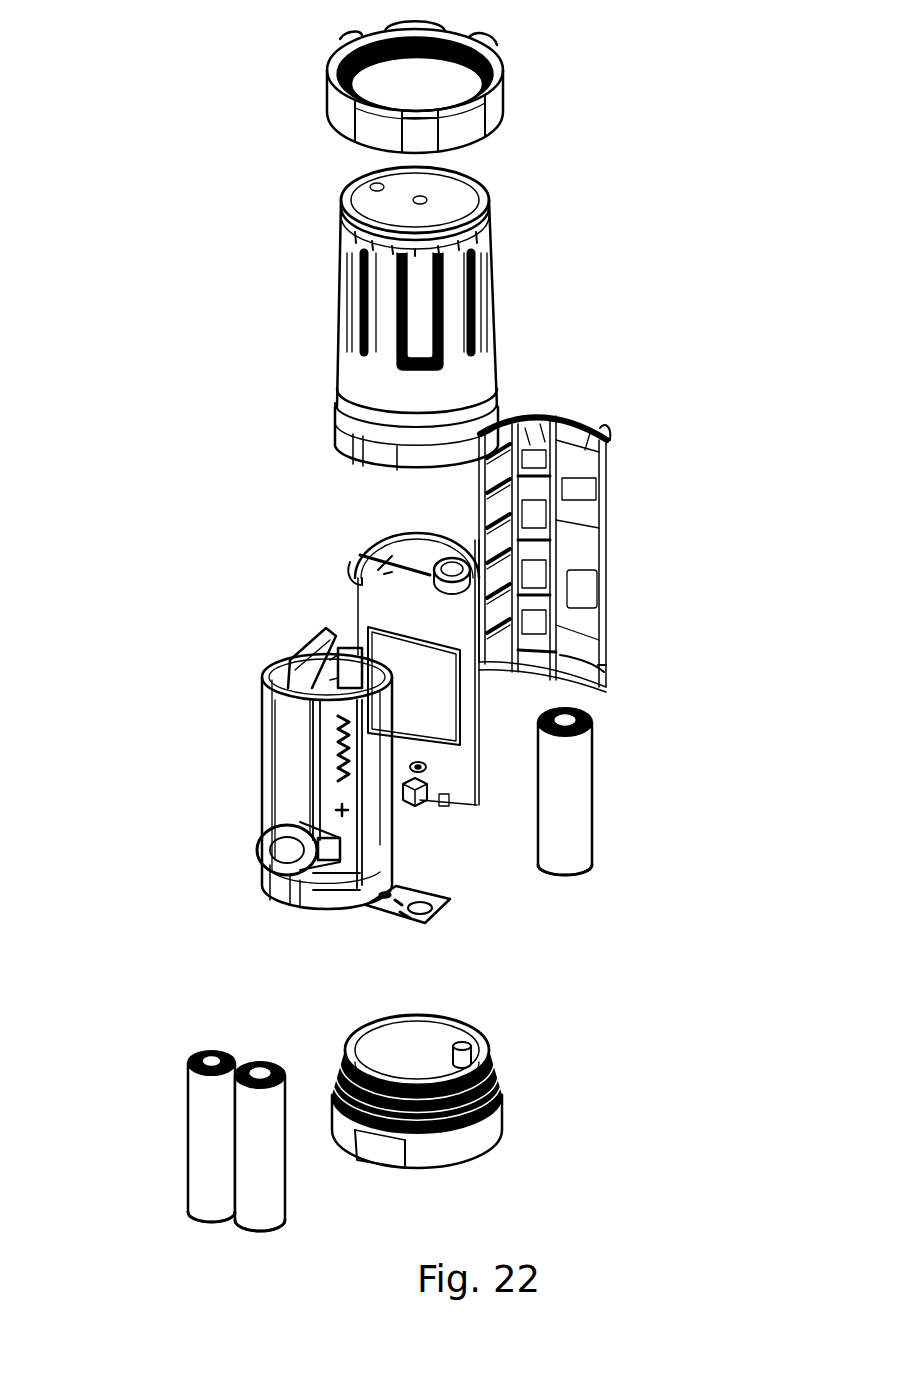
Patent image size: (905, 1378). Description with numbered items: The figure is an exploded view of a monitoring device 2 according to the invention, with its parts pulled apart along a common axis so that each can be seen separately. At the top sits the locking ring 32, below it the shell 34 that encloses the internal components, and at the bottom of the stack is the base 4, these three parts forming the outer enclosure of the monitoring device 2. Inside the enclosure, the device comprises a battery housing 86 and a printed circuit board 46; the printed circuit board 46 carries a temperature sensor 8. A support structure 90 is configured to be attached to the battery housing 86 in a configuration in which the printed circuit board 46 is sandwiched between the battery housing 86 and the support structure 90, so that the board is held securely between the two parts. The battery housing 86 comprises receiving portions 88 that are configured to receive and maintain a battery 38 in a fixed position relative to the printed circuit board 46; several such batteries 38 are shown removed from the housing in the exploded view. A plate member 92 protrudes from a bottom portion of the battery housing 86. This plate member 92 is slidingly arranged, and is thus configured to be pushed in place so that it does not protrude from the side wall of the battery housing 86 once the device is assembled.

The monitoring device 2 is at (166, 455).
The locking ring 32 is at (508, 100).
The shell 34 is at (333, 358).
The support structure 90 is at (612, 462).
The printed circuit board 46 is at (338, 528).
The temperature sensor 8 is at (447, 810).
The battery housing 86 is at (262, 722).
The receiving portions 88 is at (285, 775).
The plate member 92 is at (443, 911).
The battery 38 is at (588, 787).
The base 4 is at (516, 1107).